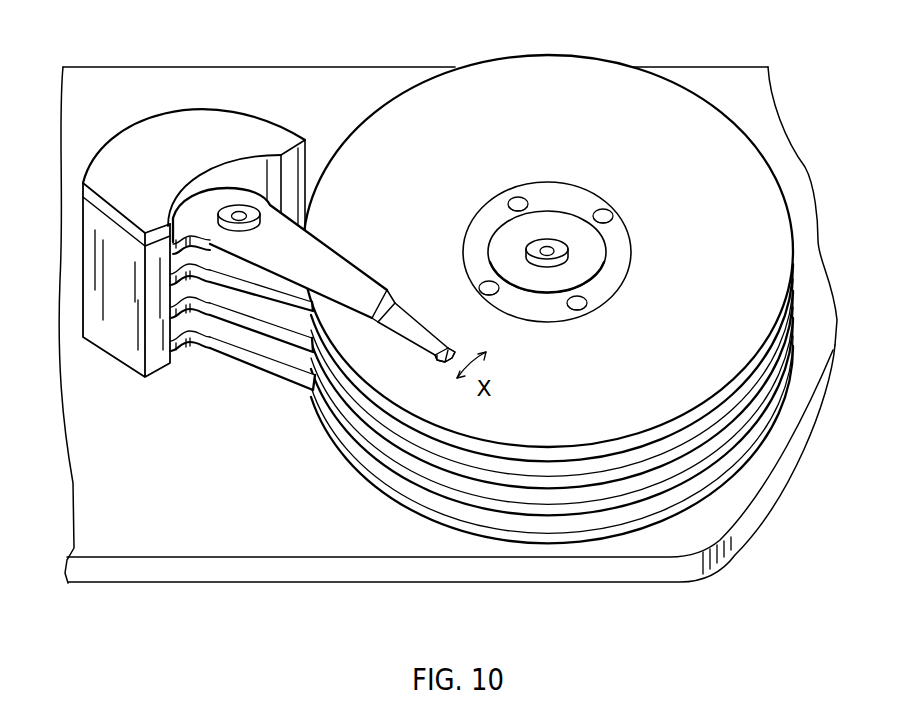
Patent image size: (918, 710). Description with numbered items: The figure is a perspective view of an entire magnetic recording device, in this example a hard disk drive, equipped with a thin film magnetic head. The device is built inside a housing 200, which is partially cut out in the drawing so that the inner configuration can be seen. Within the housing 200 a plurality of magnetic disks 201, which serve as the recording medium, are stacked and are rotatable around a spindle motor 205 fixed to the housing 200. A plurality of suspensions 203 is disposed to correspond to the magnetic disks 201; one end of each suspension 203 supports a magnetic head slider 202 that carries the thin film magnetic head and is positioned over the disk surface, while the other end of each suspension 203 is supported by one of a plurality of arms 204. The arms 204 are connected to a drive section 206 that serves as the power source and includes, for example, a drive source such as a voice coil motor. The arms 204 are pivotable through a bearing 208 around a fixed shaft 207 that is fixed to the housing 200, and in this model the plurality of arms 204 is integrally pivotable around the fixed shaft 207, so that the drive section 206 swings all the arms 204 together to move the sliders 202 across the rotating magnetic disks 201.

The housing 200 is at (720, 83).
The magnetic disk 201 is at (732, 227).
The magnetic head slider 202 is at (461, 238).
The suspension 203 is at (413, 330).
The arm 204 is at (338, 277).
The spindle motor 205 is at (547, 262).
The drive section 206 is at (150, 106).
The fixed shaft 207 is at (241, 213).
The bearing 208 is at (226, 216).